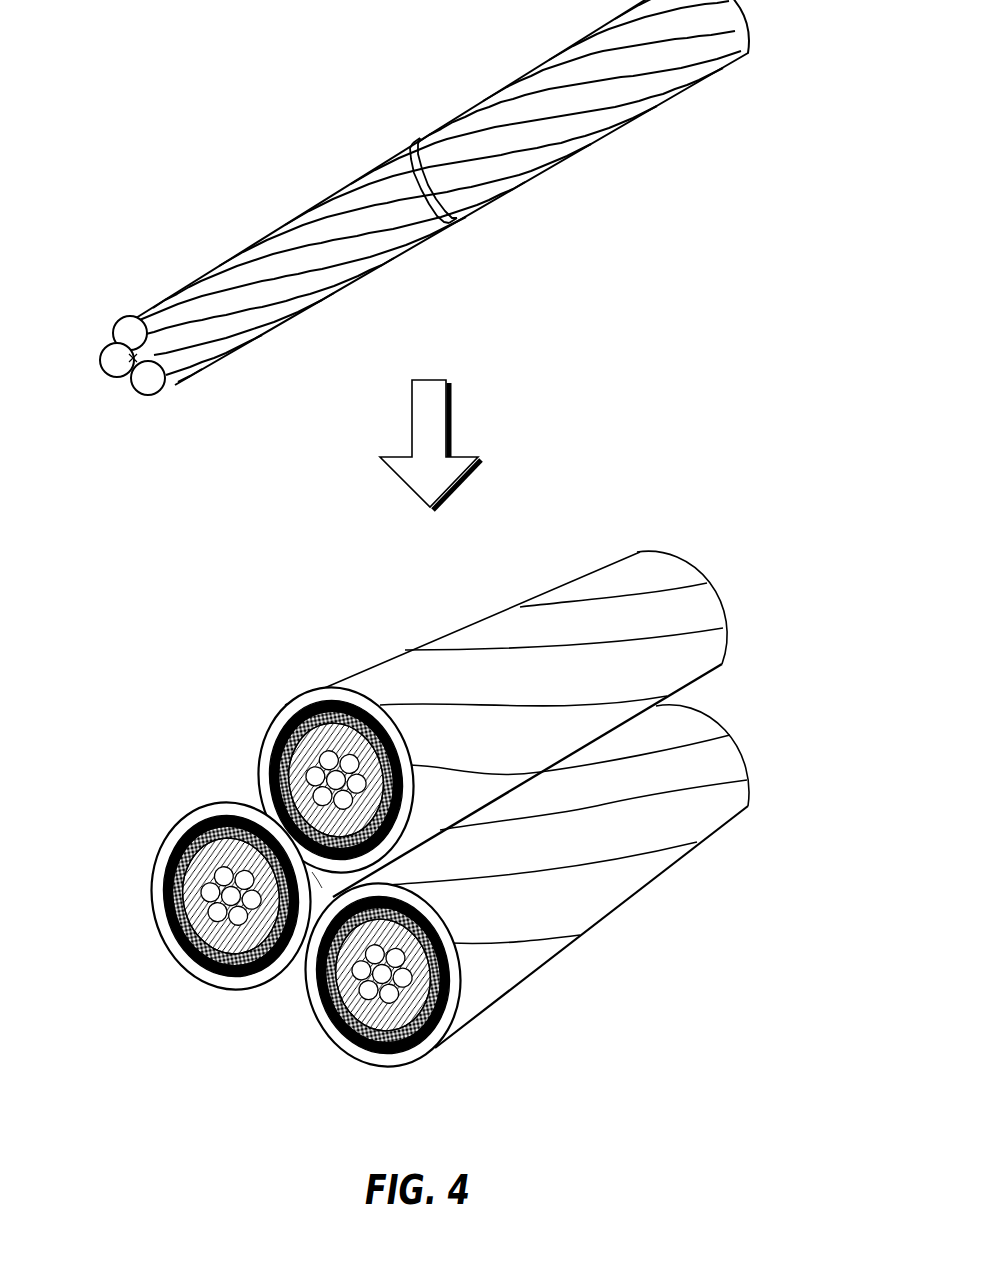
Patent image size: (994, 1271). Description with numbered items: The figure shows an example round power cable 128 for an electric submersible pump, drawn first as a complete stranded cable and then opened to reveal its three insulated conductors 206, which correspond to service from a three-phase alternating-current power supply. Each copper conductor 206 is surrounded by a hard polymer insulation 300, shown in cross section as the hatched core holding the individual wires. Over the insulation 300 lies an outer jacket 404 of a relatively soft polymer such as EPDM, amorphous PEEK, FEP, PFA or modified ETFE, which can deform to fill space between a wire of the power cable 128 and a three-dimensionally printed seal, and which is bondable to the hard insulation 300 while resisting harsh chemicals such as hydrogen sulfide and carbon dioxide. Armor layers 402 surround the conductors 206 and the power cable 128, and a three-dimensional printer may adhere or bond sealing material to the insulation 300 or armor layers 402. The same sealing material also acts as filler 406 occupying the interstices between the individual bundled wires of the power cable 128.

The power cable 128 is at (412, 539).
The armor layer 402 is at (430, 127).
The insulation 300 is at (337, 740).
The insulated conductor 206 is at (333, 782).
The outer jacket 404 is at (207, 831).
The filler 406 is at (318, 880).